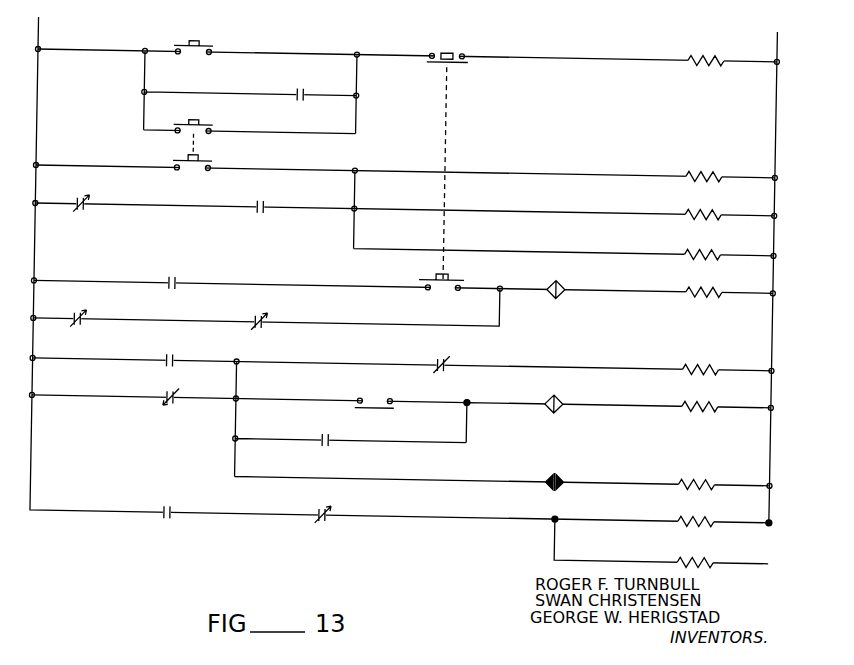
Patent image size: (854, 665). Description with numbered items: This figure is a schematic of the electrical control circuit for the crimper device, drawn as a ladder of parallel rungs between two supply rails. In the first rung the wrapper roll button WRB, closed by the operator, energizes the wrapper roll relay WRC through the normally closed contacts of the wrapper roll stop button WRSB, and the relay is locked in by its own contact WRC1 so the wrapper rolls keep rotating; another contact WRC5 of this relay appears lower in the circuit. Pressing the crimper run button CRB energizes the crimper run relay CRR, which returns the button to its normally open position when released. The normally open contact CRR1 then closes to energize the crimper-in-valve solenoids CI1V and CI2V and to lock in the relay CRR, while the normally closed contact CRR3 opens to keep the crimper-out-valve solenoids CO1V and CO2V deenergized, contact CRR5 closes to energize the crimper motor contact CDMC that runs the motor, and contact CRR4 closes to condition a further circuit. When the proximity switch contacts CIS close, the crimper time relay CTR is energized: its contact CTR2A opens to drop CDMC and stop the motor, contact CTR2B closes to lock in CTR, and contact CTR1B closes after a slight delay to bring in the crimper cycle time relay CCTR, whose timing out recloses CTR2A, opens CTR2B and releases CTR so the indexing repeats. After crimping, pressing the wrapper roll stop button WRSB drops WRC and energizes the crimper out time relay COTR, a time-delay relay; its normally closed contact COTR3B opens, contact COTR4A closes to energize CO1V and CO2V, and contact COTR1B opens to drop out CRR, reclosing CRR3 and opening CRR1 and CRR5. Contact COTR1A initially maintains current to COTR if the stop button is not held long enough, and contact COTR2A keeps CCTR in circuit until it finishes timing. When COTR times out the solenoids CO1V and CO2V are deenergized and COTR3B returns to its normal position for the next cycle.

The wrapper roll button WRB is at (197, 36).
The wrapper roll relay contact WRC1 is at (313, 82).
The crimper run button CRB is at (194, 133).
The wrapper roll stop button WRSB is at (446, 161).
The wrapper roll relay WRC is at (707, 49).
The crimper run relay CRR is at (704, 165).
The crimper out time relay contact COTR1B is at (92, 214).
The crimper run relay contact CRR1 is at (268, 219).
The crimper-in-valve solenoid CI1V is at (704, 205).
The crimper-in-valve solenoid CI2V is at (702, 245).
The crimper run relay contact CRR4 is at (183, 273).
The crimper out time relay contact COTR3B is at (575, 282).
The crimper out time relay COTR is at (706, 282).
The wrapper roll relay contact WRC5 is at (84, 309).
The crimper out time relay contact COTR1A is at (266, 312).
The crimper run relay contact CRR5 is at (180, 352).
The crimper time relay contact CTR2A is at (438, 358).
The crimper motor contact CDMC is at (697, 358).
The crimper out time relay contact COTR2A is at (191, 389).
The proximity switch contacts CIS is at (375, 392).
The crimper cycle time relay CCTR is at (627, 435).
The crimper time relay CTR is at (700, 396).
The crimper time relay contact CTR2B is at (336, 430).
The crimper time relay contact CTR1B is at (558, 471).
The crimper out time relay contact COTR4A is at (183, 503).
The crimper run relay contact CRR3 is at (326, 506).
The crimper-out-valve solenoid CO1V is at (696, 512).
The crimper-out-valve solenoid CO2V is at (698, 552).